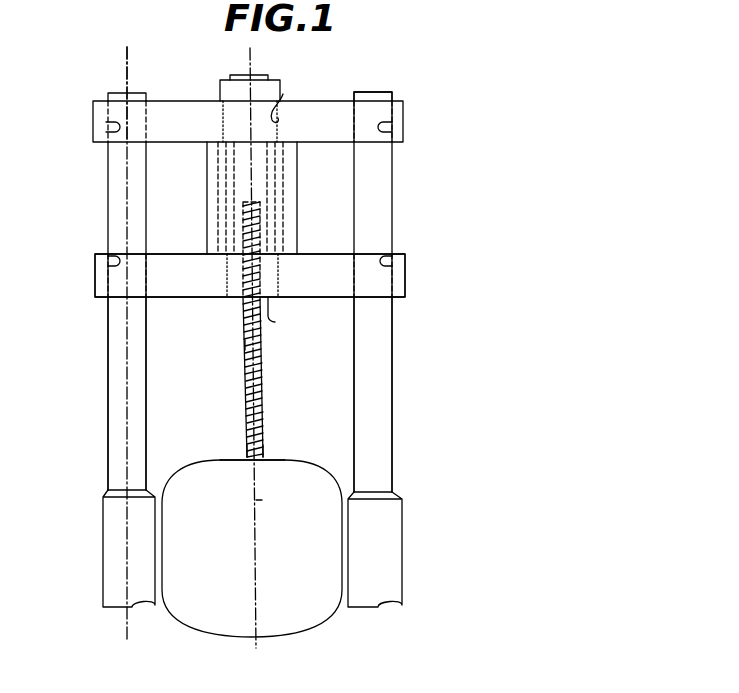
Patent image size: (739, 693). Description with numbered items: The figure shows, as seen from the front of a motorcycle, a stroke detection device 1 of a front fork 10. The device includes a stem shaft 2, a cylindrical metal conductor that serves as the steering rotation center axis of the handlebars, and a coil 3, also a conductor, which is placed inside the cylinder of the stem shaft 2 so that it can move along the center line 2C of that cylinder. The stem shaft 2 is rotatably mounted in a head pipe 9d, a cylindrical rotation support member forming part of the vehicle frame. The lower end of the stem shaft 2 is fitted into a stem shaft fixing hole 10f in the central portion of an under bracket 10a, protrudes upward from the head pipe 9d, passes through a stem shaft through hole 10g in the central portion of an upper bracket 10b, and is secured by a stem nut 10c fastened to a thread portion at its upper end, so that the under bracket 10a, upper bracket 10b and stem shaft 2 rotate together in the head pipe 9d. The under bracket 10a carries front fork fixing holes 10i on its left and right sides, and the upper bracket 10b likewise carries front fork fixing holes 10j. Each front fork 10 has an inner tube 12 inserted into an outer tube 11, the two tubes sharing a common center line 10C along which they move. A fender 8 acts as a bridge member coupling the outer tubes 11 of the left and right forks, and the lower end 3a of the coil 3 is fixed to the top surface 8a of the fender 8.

The stroke detection device 1 is at (245, 342).
The stem shaft 2 is at (233, 200).
The center line 2C is at (258, 500).
The coil 3 is at (263, 399).
The lower end 3a is at (247, 457).
The fender 8 is at (213, 492).
The top surface 8a is at (300, 464).
The head pipe 9d is at (284, 193).
The front fork 10 is at (106, 208).
The under bracket 10a is at (405, 285).
The upper bracket 10b is at (392, 93).
The stem nut 10c is at (280, 91).
The center line 10C is at (128, 80).
The stem shaft fixing hole 10f is at (275, 322).
The stem shaft through hole 10g is at (283, 94).
The front fork fixing holes 10i is at (108, 258).
The front fork fixing holes 10j is at (106, 132).
The outer tube 11 is at (103, 548).
The inner tube 12 is at (108, 383).